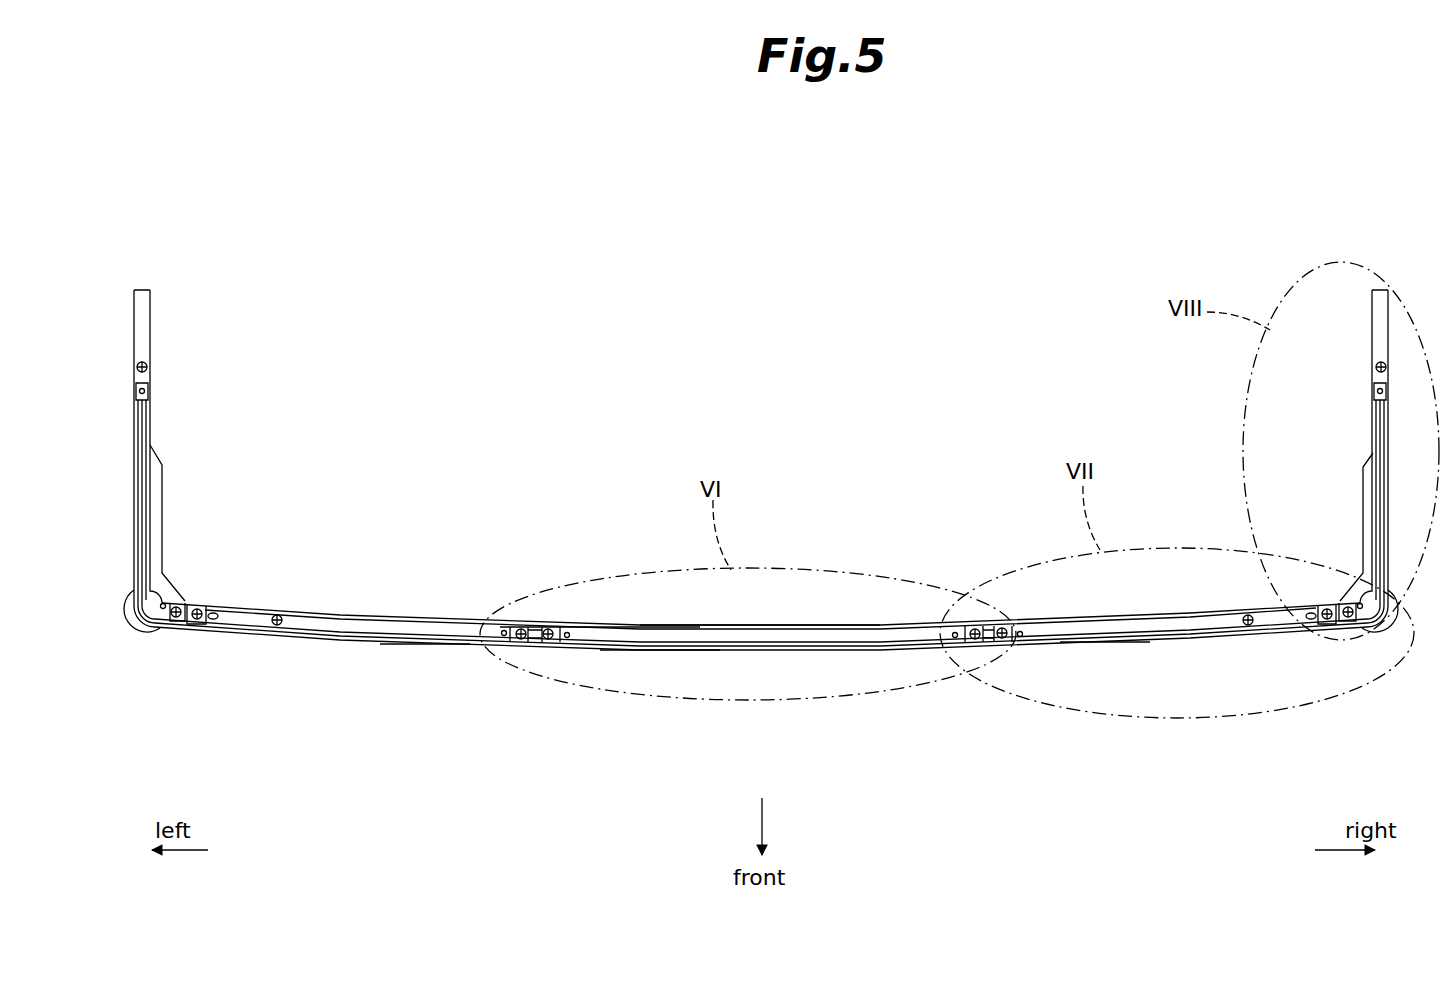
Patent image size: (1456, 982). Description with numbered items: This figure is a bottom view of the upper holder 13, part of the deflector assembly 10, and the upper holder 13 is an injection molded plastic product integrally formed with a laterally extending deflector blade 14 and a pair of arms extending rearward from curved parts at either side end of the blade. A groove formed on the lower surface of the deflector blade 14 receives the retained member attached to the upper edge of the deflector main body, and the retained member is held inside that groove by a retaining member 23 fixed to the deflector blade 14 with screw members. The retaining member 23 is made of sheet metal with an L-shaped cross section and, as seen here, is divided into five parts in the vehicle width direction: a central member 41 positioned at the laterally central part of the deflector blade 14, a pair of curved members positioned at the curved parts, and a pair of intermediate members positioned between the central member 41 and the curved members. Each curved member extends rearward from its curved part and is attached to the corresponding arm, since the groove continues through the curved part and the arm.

The frame 10 is at (822, 280).
The upper holder 13 is at (400, 608).
The deflector blade 14 is at (823, 625).
The retaining member 23 is at (594, 628).
The central member 41 is at (655, 650).